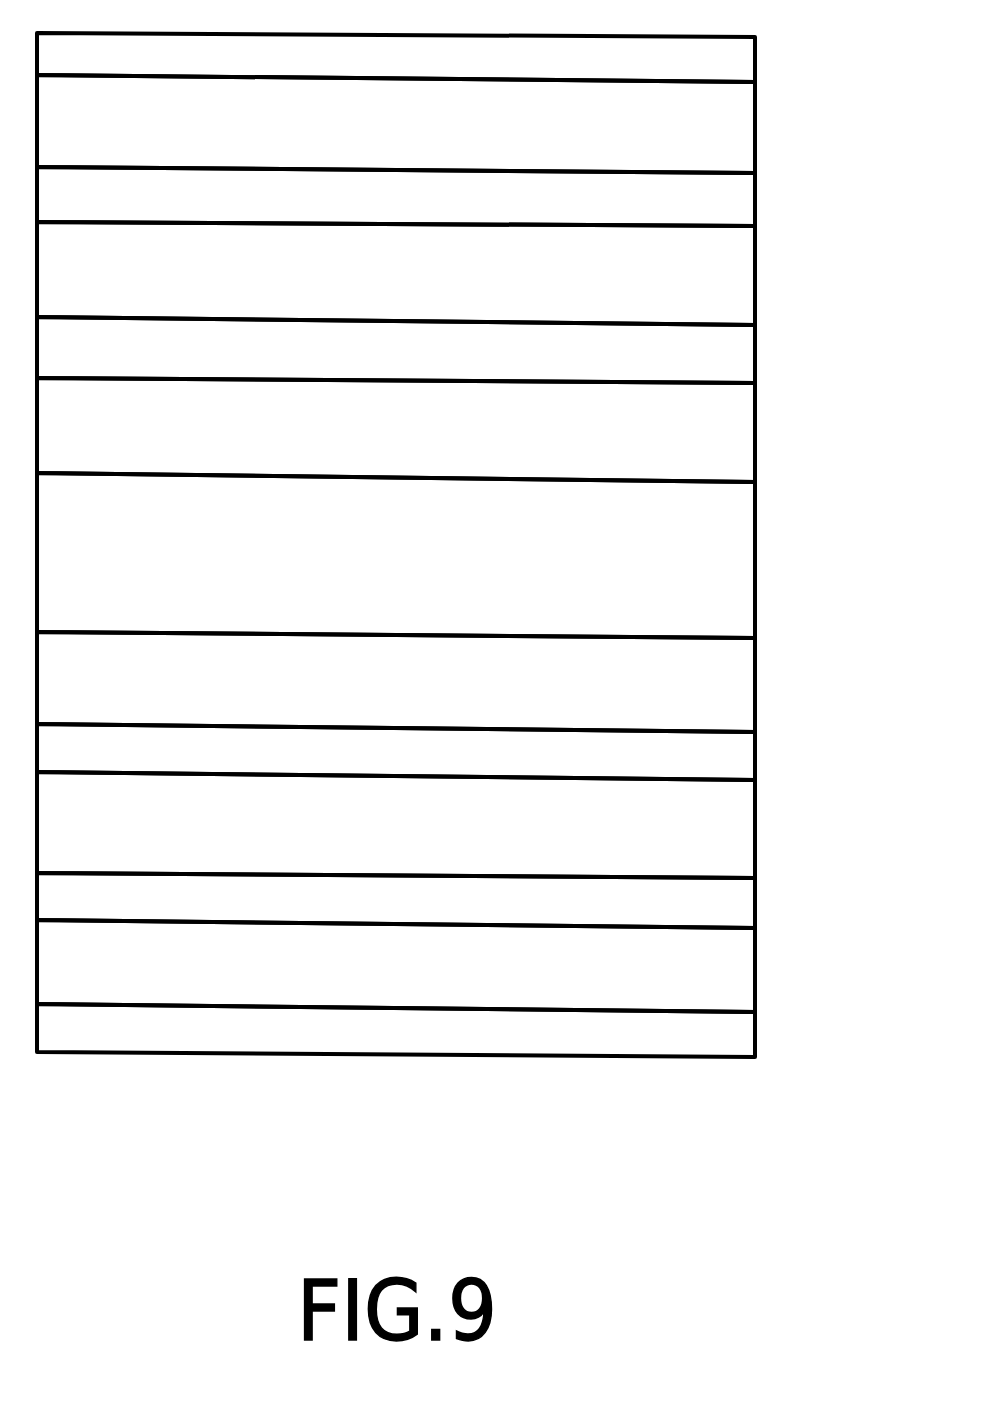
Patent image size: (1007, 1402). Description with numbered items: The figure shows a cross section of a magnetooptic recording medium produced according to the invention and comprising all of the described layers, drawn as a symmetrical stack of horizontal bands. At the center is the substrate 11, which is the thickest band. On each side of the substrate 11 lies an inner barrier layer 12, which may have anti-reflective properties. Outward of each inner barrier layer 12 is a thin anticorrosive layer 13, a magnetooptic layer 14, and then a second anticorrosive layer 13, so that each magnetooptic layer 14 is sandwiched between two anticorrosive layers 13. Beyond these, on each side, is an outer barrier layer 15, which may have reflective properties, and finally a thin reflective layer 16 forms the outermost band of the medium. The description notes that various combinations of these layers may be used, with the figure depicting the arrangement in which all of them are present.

The substrate 11 is at (733, 557).
The inner barrier layers 12 is at (733, 430).
The anticorrosive layers 13 is at (733, 198).
The magnetooptic layer 14 is at (737, 273).
The outer barrier layers 15 is at (733, 137).
The reflective layers 16 is at (733, 62).